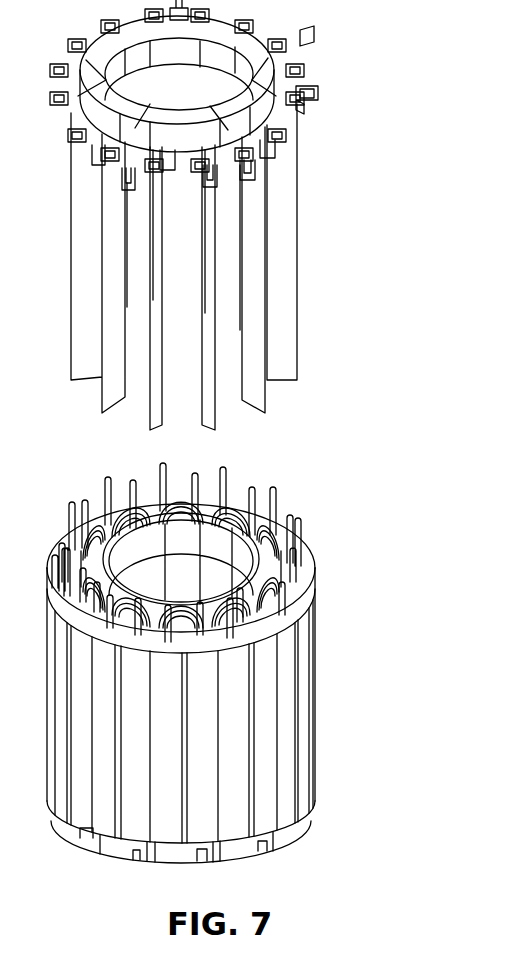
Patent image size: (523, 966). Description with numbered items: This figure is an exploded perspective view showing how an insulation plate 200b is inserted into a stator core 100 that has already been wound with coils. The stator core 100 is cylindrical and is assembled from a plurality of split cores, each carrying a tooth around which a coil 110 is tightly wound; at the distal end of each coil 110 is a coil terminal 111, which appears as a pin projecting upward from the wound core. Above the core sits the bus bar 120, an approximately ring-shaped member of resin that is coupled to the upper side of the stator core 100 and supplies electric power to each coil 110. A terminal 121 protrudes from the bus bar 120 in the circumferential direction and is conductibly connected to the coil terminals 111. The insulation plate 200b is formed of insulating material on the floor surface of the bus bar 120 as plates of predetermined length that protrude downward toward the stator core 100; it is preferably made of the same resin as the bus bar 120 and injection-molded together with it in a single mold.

The stator core 100 is at (348, 603).
The coil 110 is at (233, 500).
The coil terminal 111 is at (277, 495).
The bus bar 120 is at (323, 42).
The terminal 121 is at (326, 97).
The insulation plate 200b is at (287, 241).